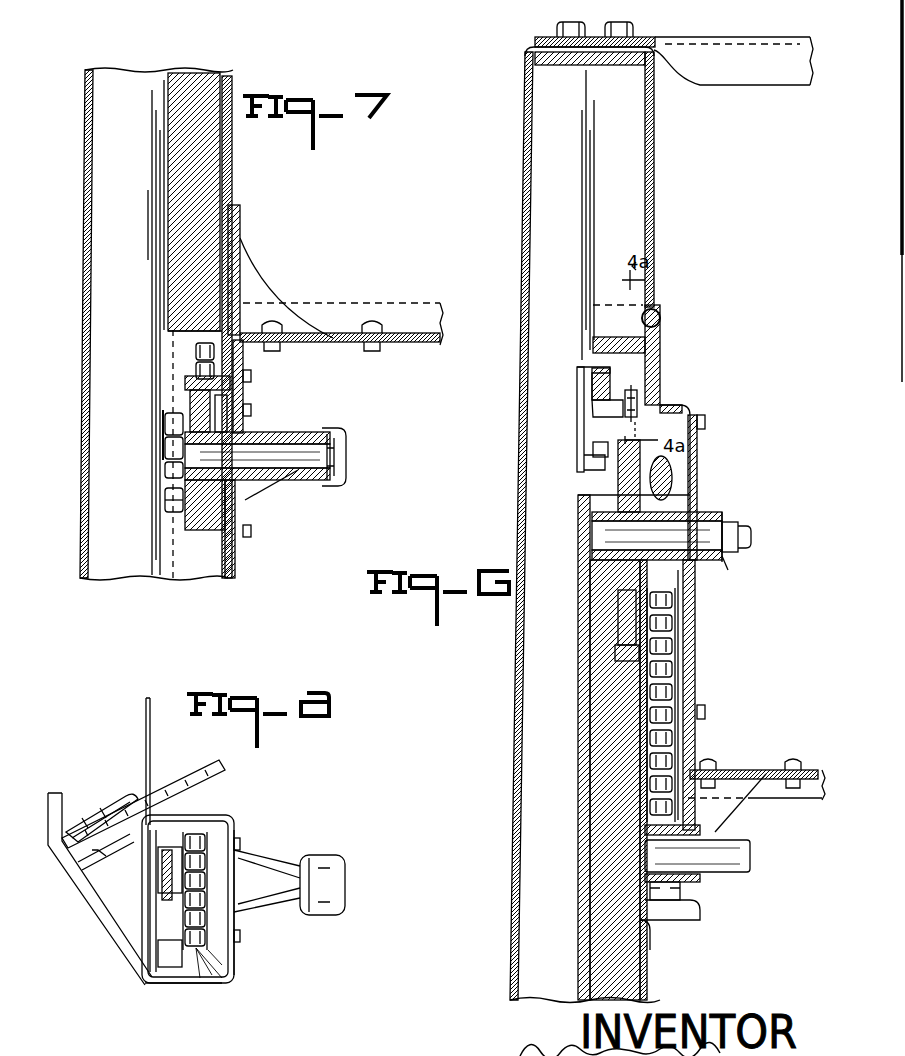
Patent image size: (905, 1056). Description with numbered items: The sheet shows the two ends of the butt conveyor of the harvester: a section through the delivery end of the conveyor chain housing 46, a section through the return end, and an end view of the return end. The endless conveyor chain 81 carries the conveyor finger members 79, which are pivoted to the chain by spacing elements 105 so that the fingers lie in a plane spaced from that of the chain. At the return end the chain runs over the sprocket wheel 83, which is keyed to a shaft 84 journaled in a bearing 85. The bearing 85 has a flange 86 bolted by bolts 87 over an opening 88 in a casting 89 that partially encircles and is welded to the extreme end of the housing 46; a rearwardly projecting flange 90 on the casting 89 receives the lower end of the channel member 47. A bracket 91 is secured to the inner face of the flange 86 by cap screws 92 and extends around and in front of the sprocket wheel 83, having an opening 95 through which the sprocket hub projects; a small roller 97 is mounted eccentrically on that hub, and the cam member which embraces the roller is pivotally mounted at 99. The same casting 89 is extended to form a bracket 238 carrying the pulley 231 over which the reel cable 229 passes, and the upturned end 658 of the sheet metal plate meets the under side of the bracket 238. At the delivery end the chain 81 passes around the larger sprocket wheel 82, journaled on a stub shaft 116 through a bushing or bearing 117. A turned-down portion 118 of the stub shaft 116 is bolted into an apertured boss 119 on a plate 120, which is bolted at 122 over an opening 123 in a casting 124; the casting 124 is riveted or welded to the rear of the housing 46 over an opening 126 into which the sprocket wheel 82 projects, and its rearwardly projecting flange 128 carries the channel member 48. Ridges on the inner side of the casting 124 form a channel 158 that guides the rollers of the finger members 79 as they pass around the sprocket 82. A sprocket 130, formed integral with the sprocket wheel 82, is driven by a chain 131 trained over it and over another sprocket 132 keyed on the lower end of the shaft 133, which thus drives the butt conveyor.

In FIG. 7, the butt conveyor chain housing 46 is at (84, 130).
In FIG. 6, the butt conveyor chain housing 46 is at (512, 913).
In FIG. 7, the channel member 47 is at (408, 312).
In FIG. 6, the channel member 48 is at (768, 770).
In FIG. 8, the conveyor finger member 79 is at (152, 772).
In FIG. 6, the conveyor finger member 79 is at (577, 426).
In FIG. 6, the conveyor chain 81 is at (628, 655).
In FIG. 6, the sprocket wheel 82 is at (622, 476).
In FIG. 7, the sprocket wheel 83 is at (255, 432).
In FIG. 8, the sprocket wheel 83 is at (205, 872).
In FIG. 7, the shaft 84 is at (298, 452).
In FIG. 7, the bearing 85 is at (303, 482).
In FIG. 8, the bearing 85 is at (272, 892).
In FIG. 7, the flange 86 is at (244, 364).
In FIG. 8, the flange 86 is at (232, 928).
In FIG. 7, the bolts 87 is at (252, 376).
In FIG. 7, the opening 88 is at (237, 512).
In FIG. 7, the casting 89 is at (241, 232).
In FIG. 8, the casting 89 is at (224, 832).
In FIG. 7, the rearwardly projecting flange 90 is at (264, 282).
In FIG. 7, the bracket 91 is at (186, 380).
In FIG. 7, the cap screws 92 is at (252, 408).
In FIG. 7, the opening 95 is at (180, 447).
In FIG. 7, the roller 97 is at (178, 484).
In FIG. 7, the pivotal mounting 99 is at (168, 497).
In FIG. 8, the spacing element 105 is at (168, 897).
In FIG. 6, the spacing element 105 is at (596, 460).
In FIG. 6, the stub shaft 116 is at (676, 522).
In FIG. 6, the bushing or bearing 117 is at (698, 498).
In FIG. 6, the turned-down portion 118 is at (732, 540).
In FIG. 6, the apertured boss 119 is at (710, 560).
In FIG. 6, the plate 120 is at (697, 448).
In FIG. 6, the bolts 122 is at (706, 420).
In FIG. 6, the opening 123 is at (683, 638).
In FIG. 6, the casting 124 is at (662, 372).
In FIG. 6, the opening 126 is at (660, 318).
In FIG. 6, the rearwardly projecting flange 128 is at (745, 788).
In FIG. 6, the sprocket 130 is at (668, 478).
In FIG. 6, the chain 131 is at (668, 668).
In FIG. 6, the sprocket 132 is at (680, 890).
In FIG. 6, the shaft 133 is at (752, 858).
In FIG. 6, the recess or channel 158 is at (640, 365).
In FIG. 8, the cable 229 is at (205, 783).
In FIG. 8, the pulley 231 is at (90, 866).
In FIG. 8, the bracket 238 is at (118, 797).
In FIG. 8, the upturned end of sheet metal plate 658 is at (60, 850).